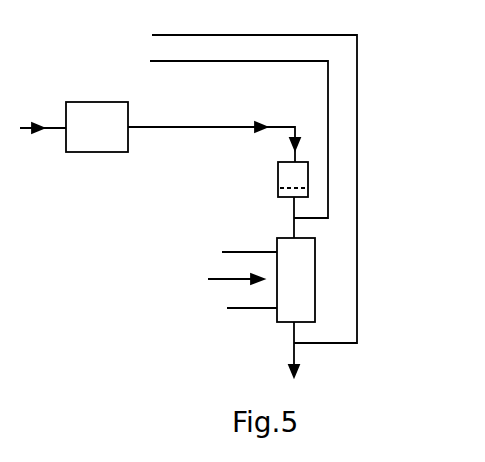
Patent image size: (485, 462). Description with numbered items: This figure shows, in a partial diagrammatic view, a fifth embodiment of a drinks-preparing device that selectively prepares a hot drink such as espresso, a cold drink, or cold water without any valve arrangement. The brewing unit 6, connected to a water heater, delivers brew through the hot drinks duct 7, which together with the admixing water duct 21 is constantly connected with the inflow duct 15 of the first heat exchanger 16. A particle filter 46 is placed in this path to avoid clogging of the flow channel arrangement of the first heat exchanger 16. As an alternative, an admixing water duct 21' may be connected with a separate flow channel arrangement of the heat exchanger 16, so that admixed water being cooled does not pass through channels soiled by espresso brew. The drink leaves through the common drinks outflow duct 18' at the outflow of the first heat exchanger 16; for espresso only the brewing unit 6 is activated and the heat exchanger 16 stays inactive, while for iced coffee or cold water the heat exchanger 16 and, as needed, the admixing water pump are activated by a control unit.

The brewing unit 6 is at (88, 115).
The hot drinks duct 7 is at (190, 127).
The admixing water duct 21 is at (239, 139).
The admixing water duct 21' is at (288, 189).
The particle filter 46 is at (290, 172).
The inflow duct 15 is at (294, 228).
The first heat exchanger 16 is at (229, 280).
The drinks outflow duct 18' is at (375, 349).